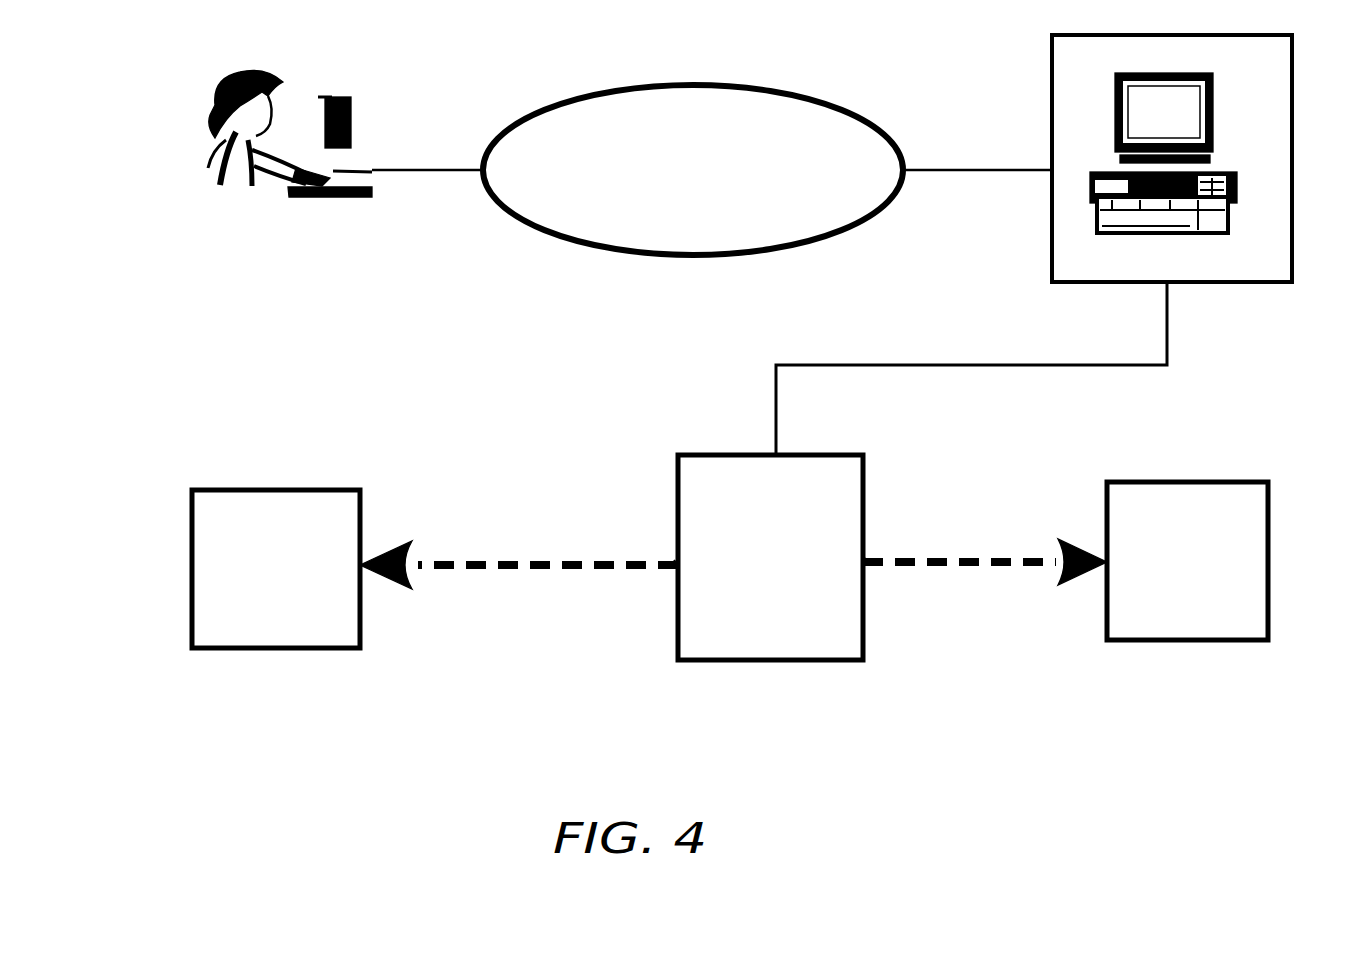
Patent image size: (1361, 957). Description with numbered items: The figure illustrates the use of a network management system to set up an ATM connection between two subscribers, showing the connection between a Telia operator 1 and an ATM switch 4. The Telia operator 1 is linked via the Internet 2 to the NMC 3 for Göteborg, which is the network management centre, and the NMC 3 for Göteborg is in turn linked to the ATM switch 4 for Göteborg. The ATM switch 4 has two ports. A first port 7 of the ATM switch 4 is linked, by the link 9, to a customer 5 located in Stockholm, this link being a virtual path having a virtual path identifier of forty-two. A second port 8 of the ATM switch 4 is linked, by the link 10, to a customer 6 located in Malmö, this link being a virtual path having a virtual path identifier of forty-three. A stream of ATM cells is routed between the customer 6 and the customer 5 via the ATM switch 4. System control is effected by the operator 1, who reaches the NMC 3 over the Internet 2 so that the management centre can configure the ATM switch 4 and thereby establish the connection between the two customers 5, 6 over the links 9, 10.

The Telia operator 1 is at (310, 195).
The Internet 2 is at (598, 232).
The NMC 3 is at (1217, 257).
The ATM switch 4 is at (810, 660).
The customer 5 is at (287, 640).
The customer 6 is at (1165, 614).
The first port 7 is at (674, 560).
The second port 8 is at (866, 558).
The link 9 is at (472, 568).
The link 10 is at (1027, 565).